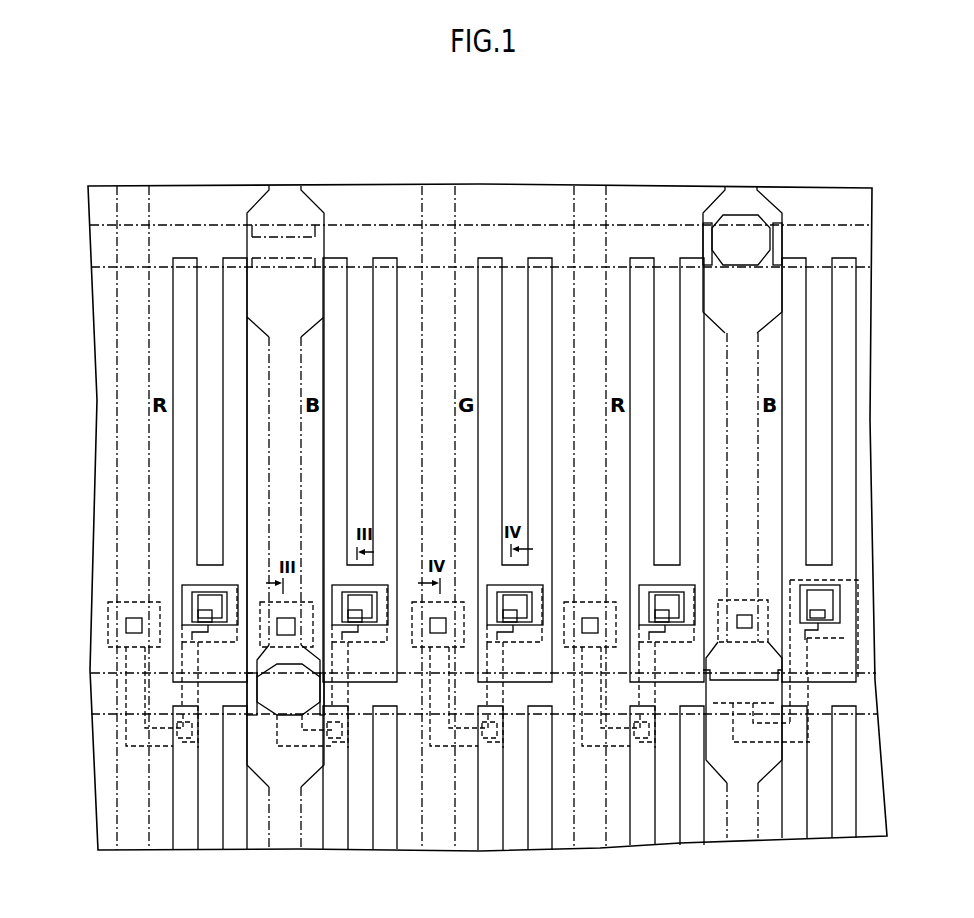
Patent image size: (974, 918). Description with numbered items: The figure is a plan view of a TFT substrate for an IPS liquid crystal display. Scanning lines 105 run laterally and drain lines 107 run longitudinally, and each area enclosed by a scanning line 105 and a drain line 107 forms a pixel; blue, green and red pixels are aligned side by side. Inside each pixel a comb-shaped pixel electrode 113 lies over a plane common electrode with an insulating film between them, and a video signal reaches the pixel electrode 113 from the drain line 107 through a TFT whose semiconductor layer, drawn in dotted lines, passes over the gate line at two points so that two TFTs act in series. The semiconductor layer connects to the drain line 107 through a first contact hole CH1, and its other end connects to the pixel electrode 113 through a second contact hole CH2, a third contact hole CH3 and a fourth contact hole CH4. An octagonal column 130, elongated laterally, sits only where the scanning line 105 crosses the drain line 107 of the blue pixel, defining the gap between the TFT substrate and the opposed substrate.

The scanning line 105 is at (105, 717).
The drain line 107 is at (268, 364).
The pixel electrode 113 is at (173, 473).
The column 130 is at (257, 674).
The first contact hole CH1 is at (744, 615).
The second contact hole CH2 is at (837, 620).
The third contact hole CH3 is at (838, 610).
The fourth contact hole CH4 is at (840, 597).